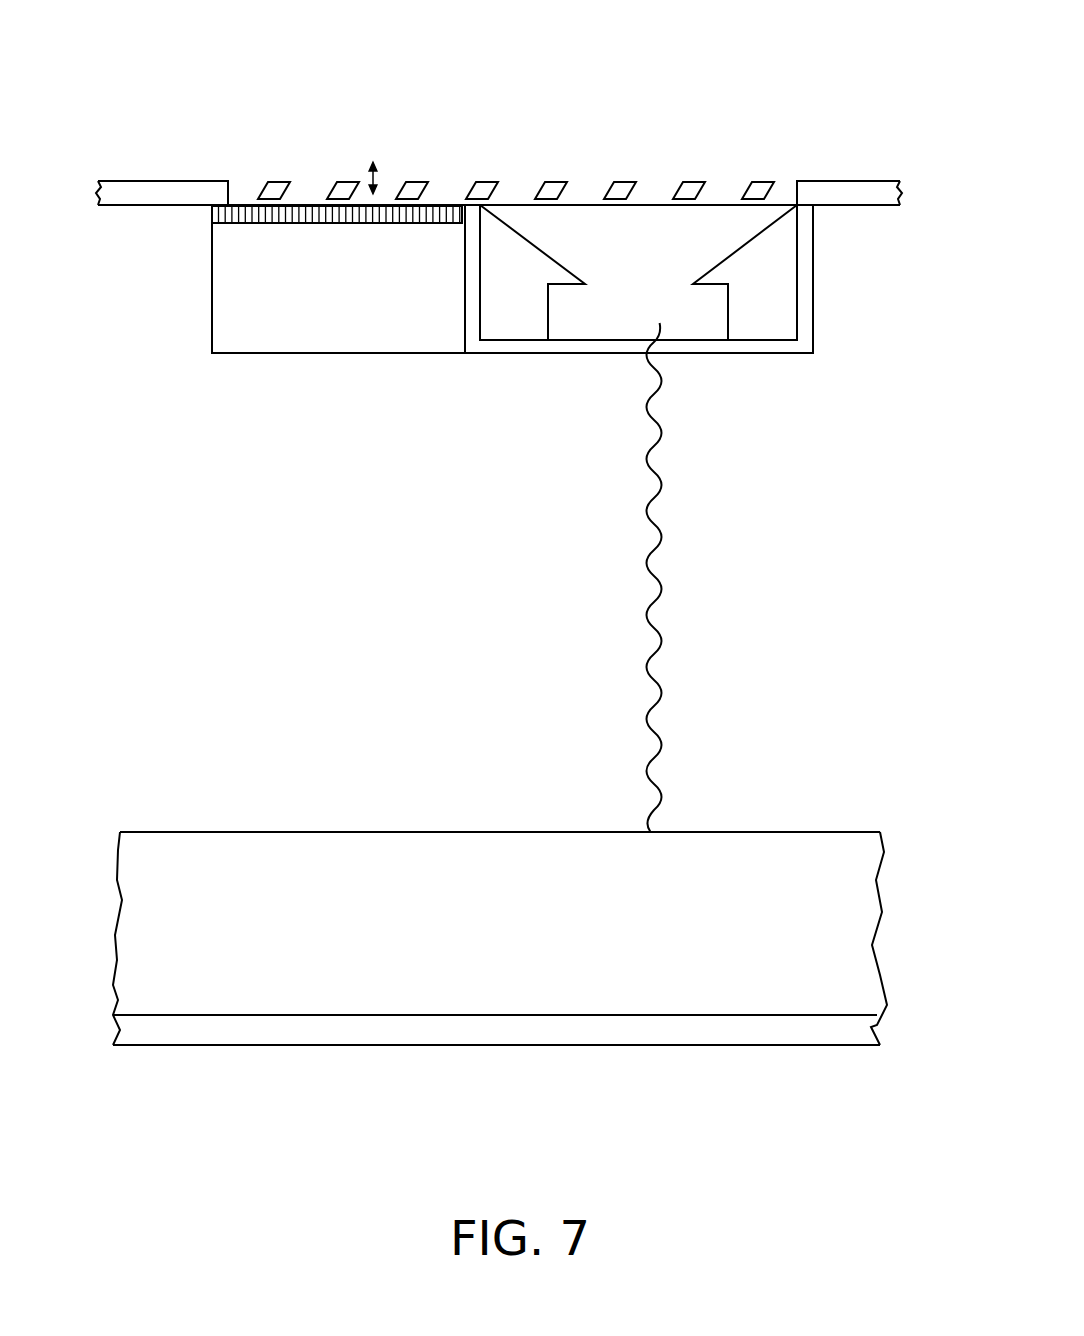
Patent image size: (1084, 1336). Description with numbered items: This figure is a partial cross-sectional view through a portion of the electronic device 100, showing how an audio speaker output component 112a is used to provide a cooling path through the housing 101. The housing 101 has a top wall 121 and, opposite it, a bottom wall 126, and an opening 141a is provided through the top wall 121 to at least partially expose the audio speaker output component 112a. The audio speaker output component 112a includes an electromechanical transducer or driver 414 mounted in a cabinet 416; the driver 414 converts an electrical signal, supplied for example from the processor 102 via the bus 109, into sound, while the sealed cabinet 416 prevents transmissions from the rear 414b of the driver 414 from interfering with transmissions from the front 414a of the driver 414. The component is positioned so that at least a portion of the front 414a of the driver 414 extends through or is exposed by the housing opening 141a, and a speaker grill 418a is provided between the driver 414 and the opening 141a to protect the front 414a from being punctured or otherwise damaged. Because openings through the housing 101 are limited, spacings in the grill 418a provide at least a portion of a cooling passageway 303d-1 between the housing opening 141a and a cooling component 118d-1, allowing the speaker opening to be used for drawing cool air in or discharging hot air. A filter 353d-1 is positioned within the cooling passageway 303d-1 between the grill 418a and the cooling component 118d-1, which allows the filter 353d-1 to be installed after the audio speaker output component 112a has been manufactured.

The electronic device 100 is at (515, 1177).
The housing 101 is at (593, 1053).
The processor 102 is at (535, 941).
The bus 109 is at (657, 578).
The audio speaker output component 112a is at (647, 96).
The cooling component 118d-1 is at (400, 320).
The top wall 121 is at (134, 195).
The bottom wall 126 is at (435, 1030).
The opening 141a is at (244, 192).
The cooling passageway 303d-1 is at (378, 176).
The filter 353d-1 is at (212, 214).
The driver 414 is at (686, 263).
The front of driver 414a is at (713, 200).
The rear of driver 414b is at (528, 243).
The cabinet 416 is at (814, 267).
The speaker grill 418a is at (347, 180).